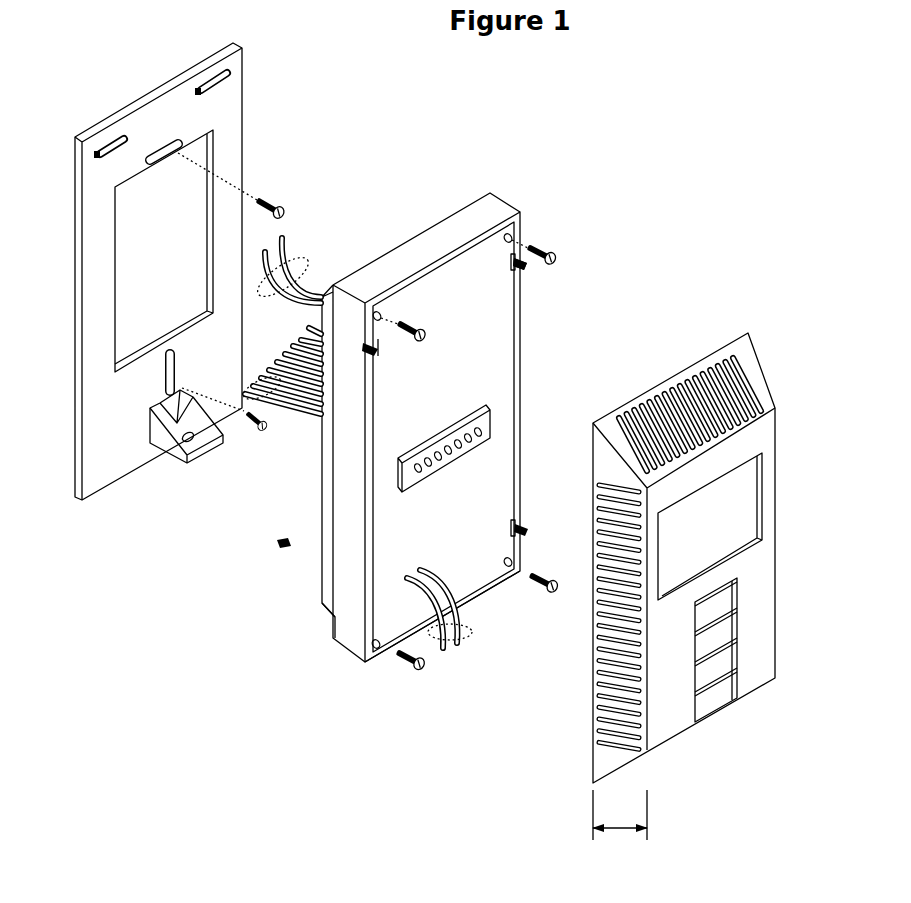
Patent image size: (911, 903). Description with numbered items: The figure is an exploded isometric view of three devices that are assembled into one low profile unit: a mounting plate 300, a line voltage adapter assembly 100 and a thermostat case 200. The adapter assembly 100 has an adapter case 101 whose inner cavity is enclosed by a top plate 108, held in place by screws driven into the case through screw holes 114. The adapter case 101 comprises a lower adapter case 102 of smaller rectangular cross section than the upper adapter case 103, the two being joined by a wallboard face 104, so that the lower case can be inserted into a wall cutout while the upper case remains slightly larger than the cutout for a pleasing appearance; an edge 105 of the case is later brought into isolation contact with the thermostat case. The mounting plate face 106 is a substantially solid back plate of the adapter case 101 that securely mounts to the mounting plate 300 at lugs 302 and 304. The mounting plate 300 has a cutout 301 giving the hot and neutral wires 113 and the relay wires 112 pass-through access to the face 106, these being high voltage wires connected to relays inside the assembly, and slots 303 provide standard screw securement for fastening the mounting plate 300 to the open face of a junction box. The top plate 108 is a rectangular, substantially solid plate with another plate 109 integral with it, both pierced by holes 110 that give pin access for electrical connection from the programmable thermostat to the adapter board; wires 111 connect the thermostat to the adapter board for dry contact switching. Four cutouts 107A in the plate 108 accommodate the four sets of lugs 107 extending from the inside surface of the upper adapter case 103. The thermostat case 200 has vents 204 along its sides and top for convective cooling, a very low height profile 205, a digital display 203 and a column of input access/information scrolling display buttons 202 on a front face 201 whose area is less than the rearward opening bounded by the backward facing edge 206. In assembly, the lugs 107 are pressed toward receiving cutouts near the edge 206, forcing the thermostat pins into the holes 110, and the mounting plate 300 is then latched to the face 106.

The line voltage adapter assembly 100 is at (530, 167).
The adapter case 101 is at (472, 389).
The lower adapter case 102 is at (322, 602).
The upper adapter case 103 is at (348, 648).
The wallboard face 104 is at (333, 632).
The contact edge 105 is at (368, 657).
The mounting plate face 106 is at (310, 568).
The lugs 107 is at (516, 265).
The cutouts 107A is at (515, 270).
The top plate 108 is at (483, 337).
The plate 109 is at (495, 418).
The holes 110 is at (487, 427).
The wires 111 is at (478, 623).
The relay wires 112 is at (259, 396).
The hot and neutral wires 113 is at (310, 250).
The screw holes 114 is at (512, 237).
The thermostat case 200 is at (750, 322).
The front face 201 is at (765, 633).
The push buttons 202 is at (720, 608).
The digital display 203 is at (748, 503).
The vents 204 is at (758, 377).
The height profile 205 is at (620, 832).
The thermostat backward facing edge 206 is at (596, 745).
The mounting plate 300 is at (257, 70).
The cutout 301 is at (125, 328).
The lug 302 is at (176, 457).
The slots 303 is at (170, 360).
The lug 304 is at (210, 73).